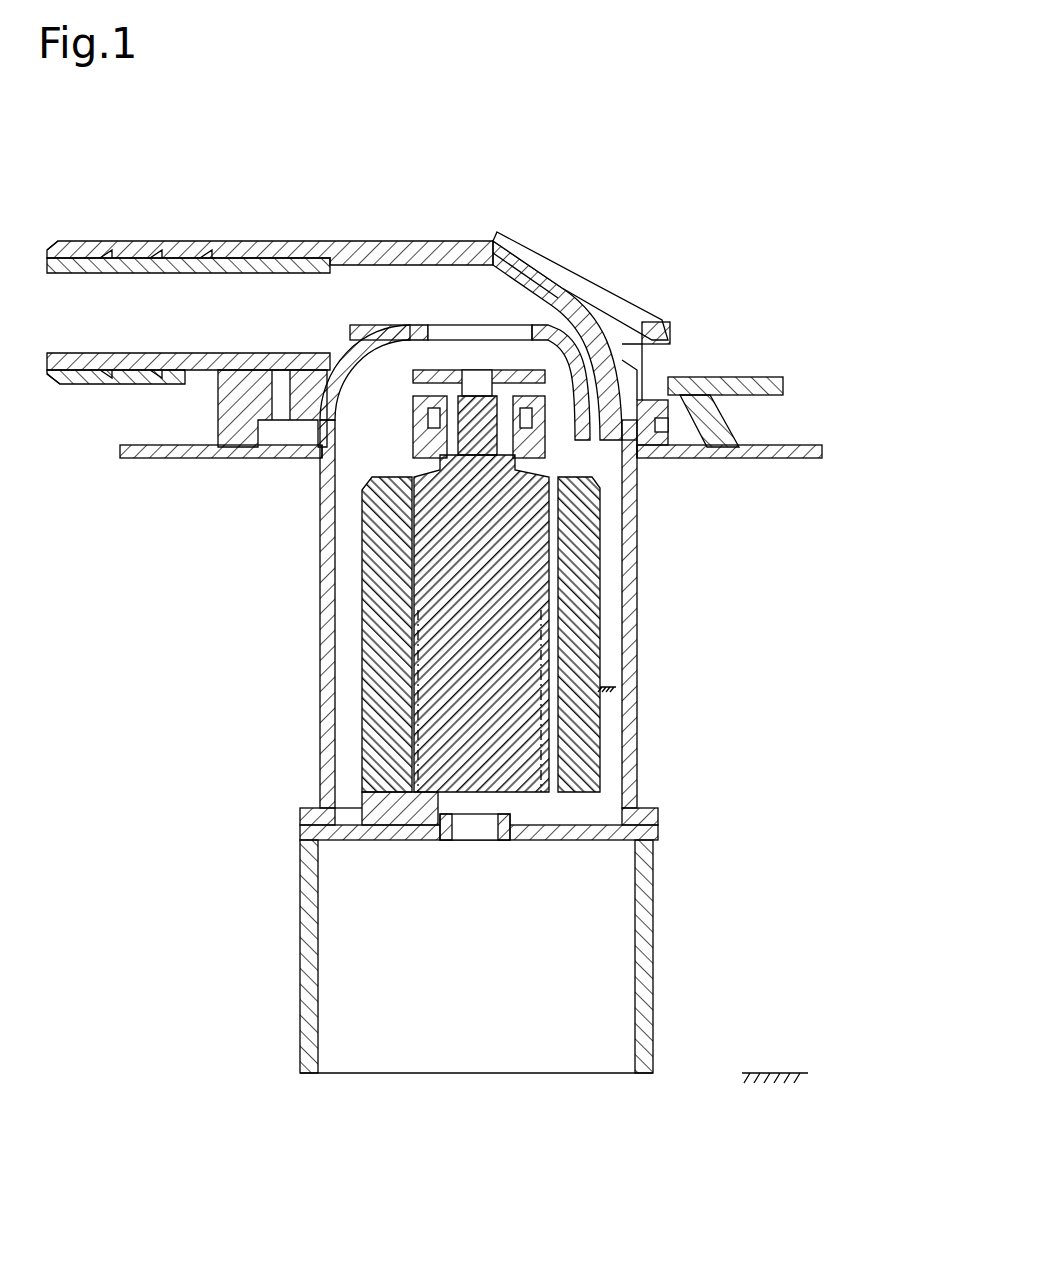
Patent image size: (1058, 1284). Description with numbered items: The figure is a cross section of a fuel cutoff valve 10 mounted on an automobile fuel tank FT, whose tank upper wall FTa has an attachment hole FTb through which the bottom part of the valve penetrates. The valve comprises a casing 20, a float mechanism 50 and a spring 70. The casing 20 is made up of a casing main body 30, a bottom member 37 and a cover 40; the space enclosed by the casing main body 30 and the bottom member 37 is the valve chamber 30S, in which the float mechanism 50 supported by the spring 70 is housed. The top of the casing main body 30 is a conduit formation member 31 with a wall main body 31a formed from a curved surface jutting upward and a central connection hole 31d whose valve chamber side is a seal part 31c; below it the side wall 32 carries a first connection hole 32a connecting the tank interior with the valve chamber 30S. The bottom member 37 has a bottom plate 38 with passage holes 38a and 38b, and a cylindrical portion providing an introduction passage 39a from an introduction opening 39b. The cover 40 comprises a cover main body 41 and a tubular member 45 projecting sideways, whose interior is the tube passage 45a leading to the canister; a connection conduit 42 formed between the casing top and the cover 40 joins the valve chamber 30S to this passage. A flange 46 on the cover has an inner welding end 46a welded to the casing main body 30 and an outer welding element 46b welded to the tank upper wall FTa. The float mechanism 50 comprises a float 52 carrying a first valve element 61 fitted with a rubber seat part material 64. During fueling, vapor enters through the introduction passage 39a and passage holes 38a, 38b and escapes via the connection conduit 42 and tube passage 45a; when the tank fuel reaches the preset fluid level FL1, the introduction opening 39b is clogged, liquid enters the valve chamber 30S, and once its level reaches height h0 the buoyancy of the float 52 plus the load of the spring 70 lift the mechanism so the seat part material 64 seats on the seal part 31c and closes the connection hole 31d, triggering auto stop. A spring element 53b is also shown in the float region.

The fuel cutoff valve 10 is at (690, 188).
The casing 20 is at (210, 585).
The casing main body 30 is at (320, 637).
The valve chamber 30S is at (605, 635).
The conduit formation member 31 is at (358, 322).
The wall main body 31a is at (415, 327).
The seal part 31c is at (596, 306).
The connection hole 31d is at (440, 333).
The side wall 32 is at (637, 655).
The first connection hole 32a is at (642, 457).
The bottom member 37 is at (300, 823).
The bottom plate 38 is at (475, 862).
The passage hole 38a is at (472, 826).
The passage hole 38b is at (592, 836).
The introduction passage 39a is at (602, 953).
The introduction opening 39b is at (562, 1074).
The cover 40 is at (423, 241).
The cover main body 41 is at (668, 392).
The connection conduit 42 is at (500, 271).
The tubular member 45 is at (283, 241).
The tube passage 45a is at (130, 272).
The flange 46 is at (872, 333).
The inner welding end 46a is at (700, 372).
The outer welding element 46b is at (725, 425).
The float mechanism 50 is at (607, 583).
The float 52 is at (599, 611).
The spring 53b is at (567, 717).
The first valve element 61 is at (479, 414).
The seat part material 64 is at (556, 369).
The spring 70 is at (599, 770).
The height h0 is at (612, 687).
The preset fluid level FL1 is at (775, 1073).
The fuel tank FT is at (489, 505).
The tank upper wall FTa is at (778, 460).
The attachment hole FTb is at (680, 460).